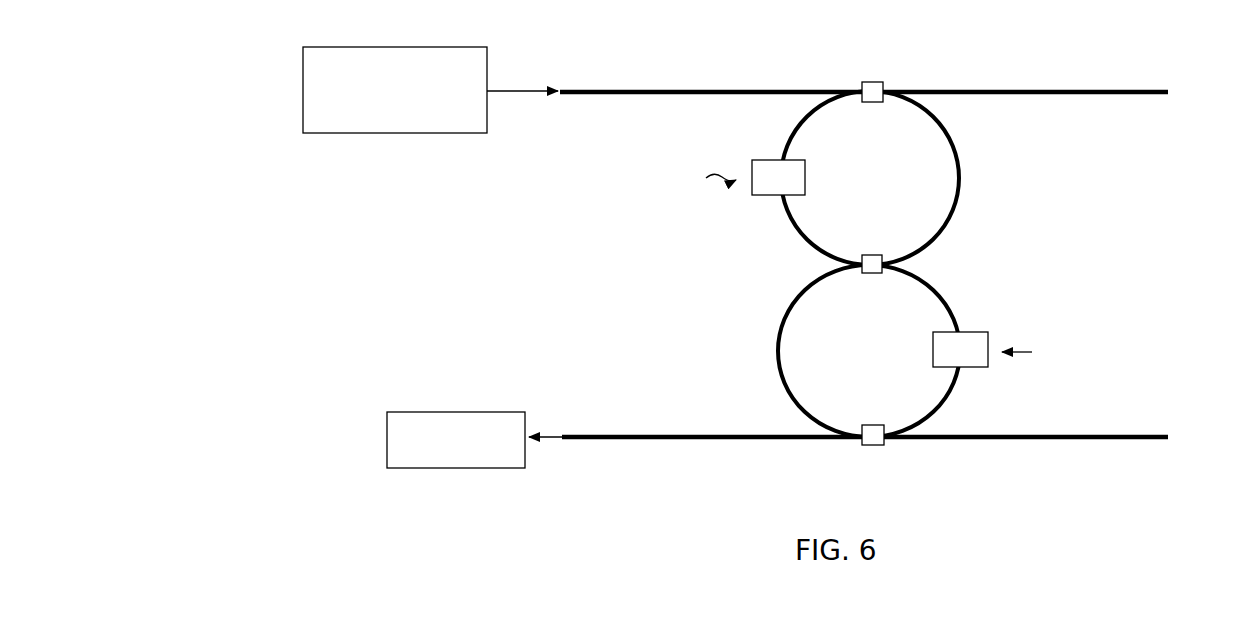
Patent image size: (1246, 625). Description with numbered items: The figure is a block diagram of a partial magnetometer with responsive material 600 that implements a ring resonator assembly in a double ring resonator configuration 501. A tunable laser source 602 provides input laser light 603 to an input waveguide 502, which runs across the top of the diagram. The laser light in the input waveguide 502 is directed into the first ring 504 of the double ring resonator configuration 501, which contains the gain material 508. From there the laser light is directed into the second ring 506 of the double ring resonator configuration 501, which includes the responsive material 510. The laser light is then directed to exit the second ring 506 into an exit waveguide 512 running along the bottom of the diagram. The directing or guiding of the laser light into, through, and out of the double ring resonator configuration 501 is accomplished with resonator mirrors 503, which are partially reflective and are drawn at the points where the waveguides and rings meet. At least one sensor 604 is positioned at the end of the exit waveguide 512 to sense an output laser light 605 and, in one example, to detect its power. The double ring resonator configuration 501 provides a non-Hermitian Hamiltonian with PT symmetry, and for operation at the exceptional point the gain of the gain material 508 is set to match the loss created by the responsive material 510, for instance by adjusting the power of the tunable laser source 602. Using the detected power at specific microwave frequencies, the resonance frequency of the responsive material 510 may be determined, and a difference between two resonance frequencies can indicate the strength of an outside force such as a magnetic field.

The partial magnetometer with responsive material 600 is at (208, 168).
The tunable laser source 602 is at (395, 90).
The input laser light 603 is at (510, 90).
The input waveguide 502 is at (678, 93).
The resonator mirrors 503 is at (873, 93).
The first ring 504 is at (964, 182).
The gain material 508 is at (726, 186).
The second ring 506 is at (786, 310).
The responsive material 510 is at (1088, 349).
The double ring resonator configuration 501 is at (1124, 227).
The output laser light 605 is at (551, 437).
The sensor 604 is at (456, 440).
The exit waveguide 512 is at (700, 441).